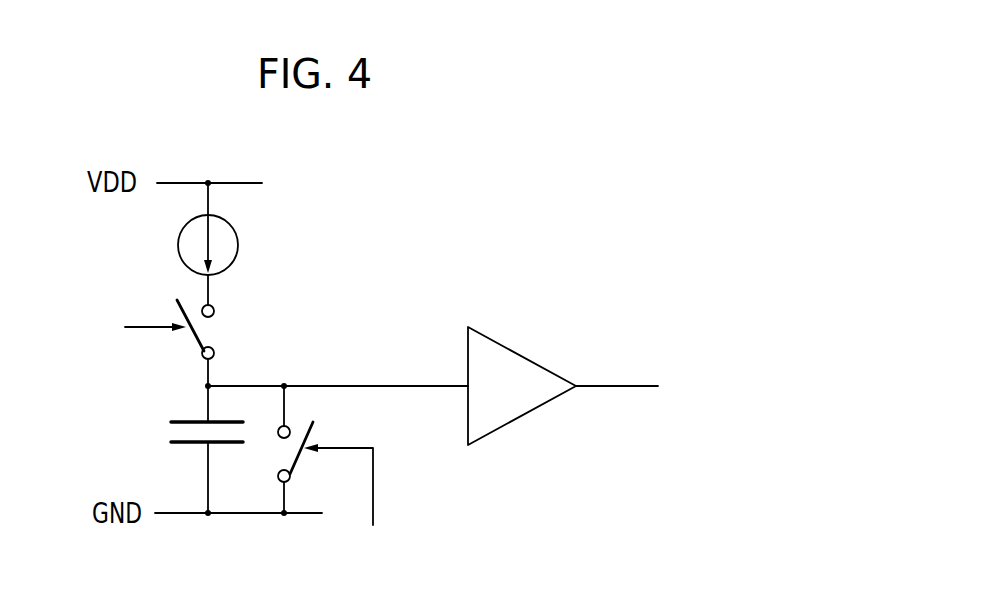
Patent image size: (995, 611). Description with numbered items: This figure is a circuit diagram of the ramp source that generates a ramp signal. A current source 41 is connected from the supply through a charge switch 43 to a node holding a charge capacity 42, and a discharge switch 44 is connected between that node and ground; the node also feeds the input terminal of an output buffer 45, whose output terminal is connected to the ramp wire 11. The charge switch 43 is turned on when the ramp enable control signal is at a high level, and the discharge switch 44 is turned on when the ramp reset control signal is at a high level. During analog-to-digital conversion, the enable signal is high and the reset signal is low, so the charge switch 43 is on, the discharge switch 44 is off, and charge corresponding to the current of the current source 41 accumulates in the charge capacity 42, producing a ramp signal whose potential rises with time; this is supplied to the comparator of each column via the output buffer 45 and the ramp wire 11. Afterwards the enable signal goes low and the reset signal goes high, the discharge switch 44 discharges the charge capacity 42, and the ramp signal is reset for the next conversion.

The ramp wire 11 is at (612, 385).
The current source 41 is at (178, 250).
The charge capacity 42 is at (180, 432).
The charge switch 43 is at (215, 330).
The discharge switch 44 is at (275, 460).
The output buffer 45 is at (512, 404).